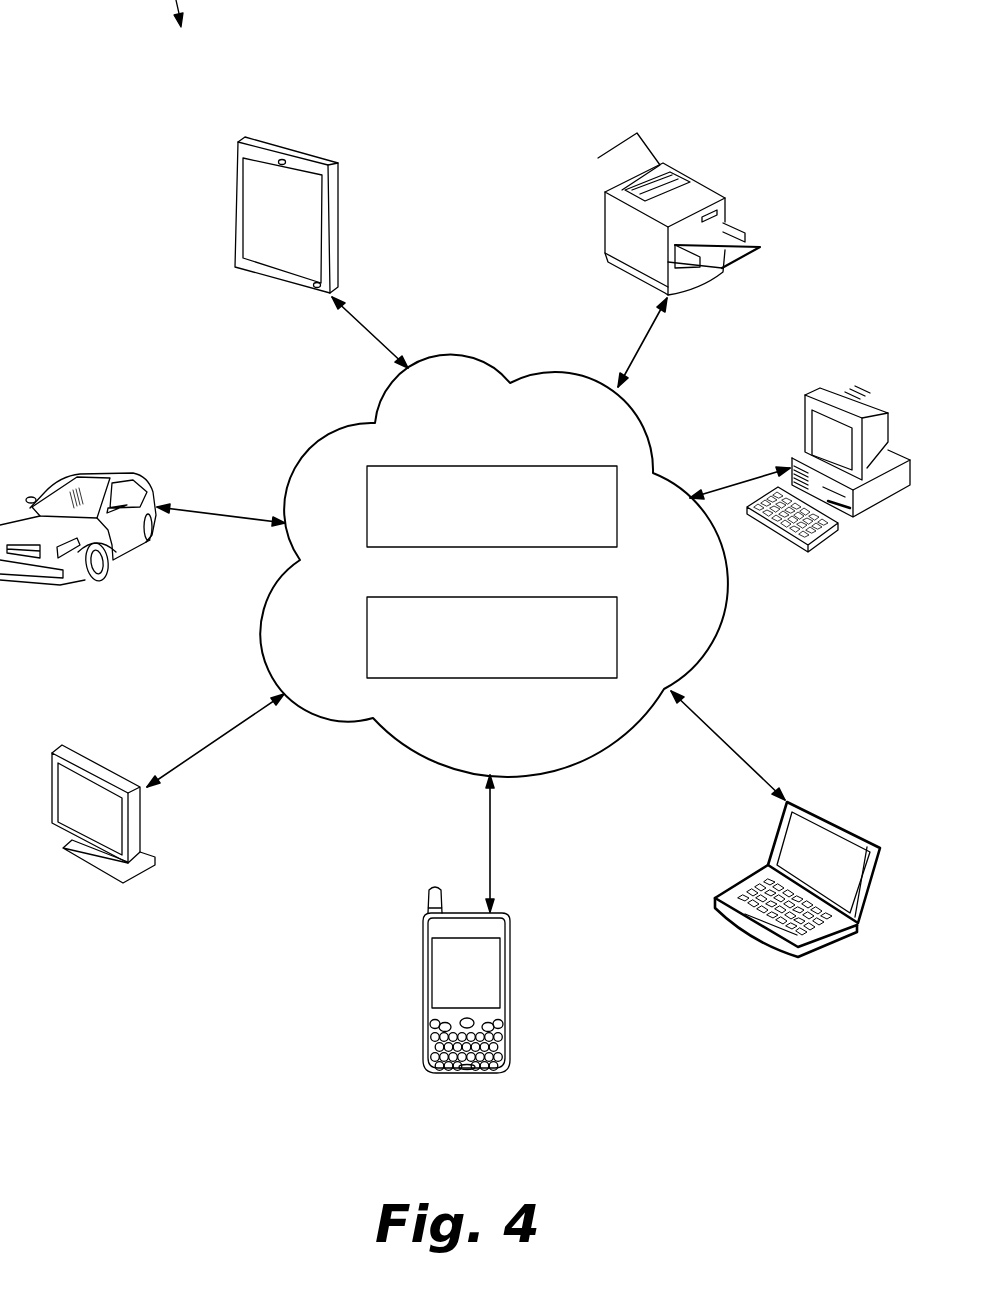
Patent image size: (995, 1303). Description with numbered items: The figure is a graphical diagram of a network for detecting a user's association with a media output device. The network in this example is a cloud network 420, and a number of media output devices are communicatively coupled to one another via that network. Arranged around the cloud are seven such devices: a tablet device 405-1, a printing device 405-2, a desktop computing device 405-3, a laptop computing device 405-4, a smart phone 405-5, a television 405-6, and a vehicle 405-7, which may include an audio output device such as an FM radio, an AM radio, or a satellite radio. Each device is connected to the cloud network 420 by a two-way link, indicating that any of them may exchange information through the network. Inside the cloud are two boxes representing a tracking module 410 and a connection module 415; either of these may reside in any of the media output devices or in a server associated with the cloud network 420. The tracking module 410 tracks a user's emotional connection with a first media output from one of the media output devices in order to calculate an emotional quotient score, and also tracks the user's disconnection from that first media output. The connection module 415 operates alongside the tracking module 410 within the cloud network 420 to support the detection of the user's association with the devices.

The tablet device 405-1 is at (270, 238).
The printing device 405-2 is at (630, 235).
The desktop computing device 405-3 is at (840, 408).
The laptop computing device 405-4 is at (807, 850).
The smart phone 405-5 is at (452, 983).
The television 405-6 is at (103, 815).
The vehicle 405-7 is at (87, 480).
The tracking module 410 is at (492, 506).
The connection module 415 is at (492, 637).
The cloud network 420 is at (390, 408).